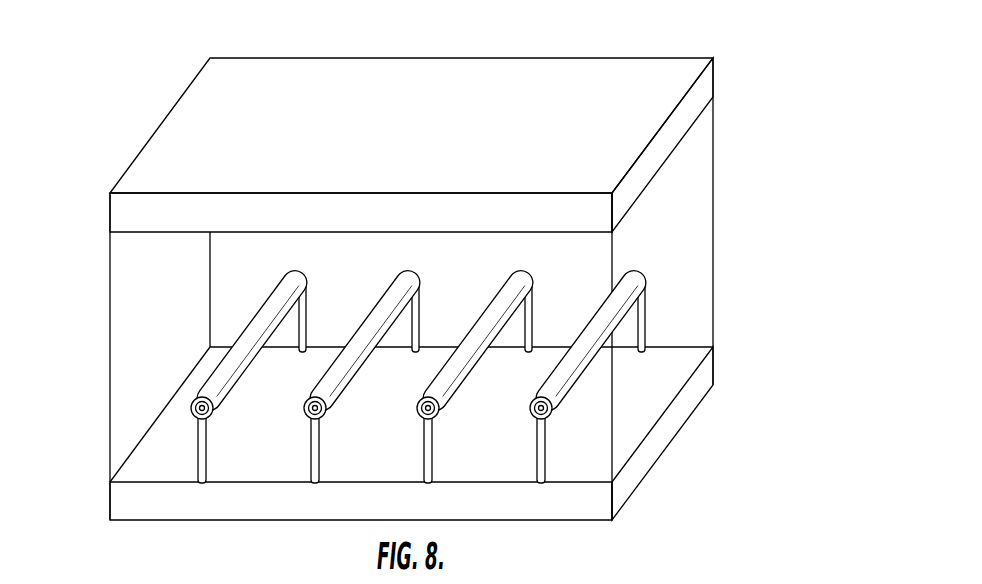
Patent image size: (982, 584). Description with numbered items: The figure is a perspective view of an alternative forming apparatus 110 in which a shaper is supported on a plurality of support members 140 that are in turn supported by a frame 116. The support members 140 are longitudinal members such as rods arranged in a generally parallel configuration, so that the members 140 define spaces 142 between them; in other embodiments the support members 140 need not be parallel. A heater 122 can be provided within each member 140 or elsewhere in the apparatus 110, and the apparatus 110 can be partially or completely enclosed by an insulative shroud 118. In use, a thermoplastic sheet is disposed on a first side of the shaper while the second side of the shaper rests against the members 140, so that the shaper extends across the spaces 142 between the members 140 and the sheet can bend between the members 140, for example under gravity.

The forming apparatus 110 is at (764, 42).
The frame 116 is at (677, 420).
The insulative shroud 118 is at (662, 157).
The heater 122 is at (198, 402).
The support members 140 is at (407, 278).
The spaces 142 is at (493, 410).